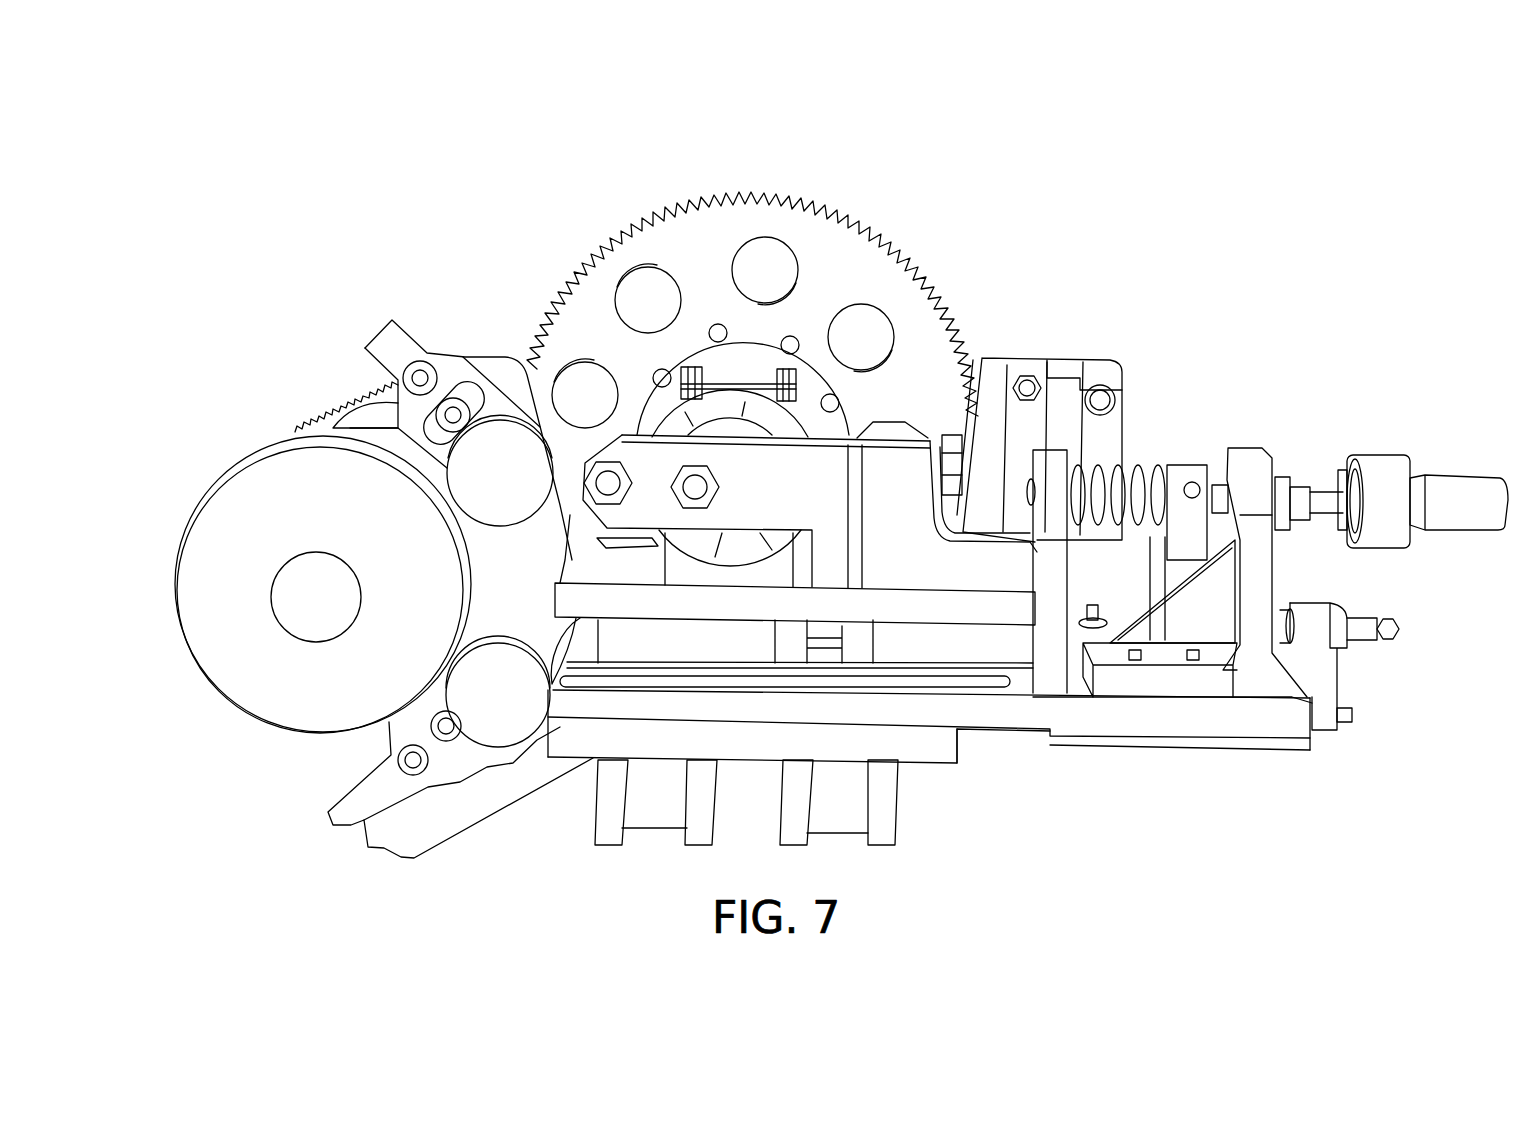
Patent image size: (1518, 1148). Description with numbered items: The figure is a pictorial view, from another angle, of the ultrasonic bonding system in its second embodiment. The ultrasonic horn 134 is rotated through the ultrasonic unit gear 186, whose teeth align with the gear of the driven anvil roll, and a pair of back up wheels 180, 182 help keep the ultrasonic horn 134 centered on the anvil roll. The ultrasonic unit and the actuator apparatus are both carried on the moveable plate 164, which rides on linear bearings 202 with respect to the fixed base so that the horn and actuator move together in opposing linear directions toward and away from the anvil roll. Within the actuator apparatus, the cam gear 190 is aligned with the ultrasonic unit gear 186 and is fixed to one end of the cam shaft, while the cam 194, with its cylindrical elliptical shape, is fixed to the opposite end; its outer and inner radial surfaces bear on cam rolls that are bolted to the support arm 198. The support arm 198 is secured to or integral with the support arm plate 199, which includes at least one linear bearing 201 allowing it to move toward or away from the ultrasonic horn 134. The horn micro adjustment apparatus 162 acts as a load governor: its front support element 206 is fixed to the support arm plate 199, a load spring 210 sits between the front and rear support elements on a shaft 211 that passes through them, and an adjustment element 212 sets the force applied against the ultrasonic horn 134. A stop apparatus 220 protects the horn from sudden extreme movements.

The ultrasonic horn 134 is at (243, 457).
The ultrasonic unit gear 186 is at (337, 400).
The back up wheel 180 is at (492, 428).
The back up wheel 182 is at (503, 748).
The moveable plate 164 is at (562, 762).
The cam gear 190 is at (717, 200).
The cam 194 is at (720, 403).
The support arm 198 is at (902, 438).
The stop apparatus 220 is at (1102, 355).
The load spring 210 is at (1148, 463).
The adjustment element 212 is at (1180, 457).
The shaft 211 is at (1222, 470).
The horn micro adjustment apparatus 162 is at (1350, 427).
The front support element 206 is at (1272, 582).
The linear bearing 201 is at (1047, 750).
The support arm plate 199 is at (990, 729).
The linear bearings 202 is at (752, 762).